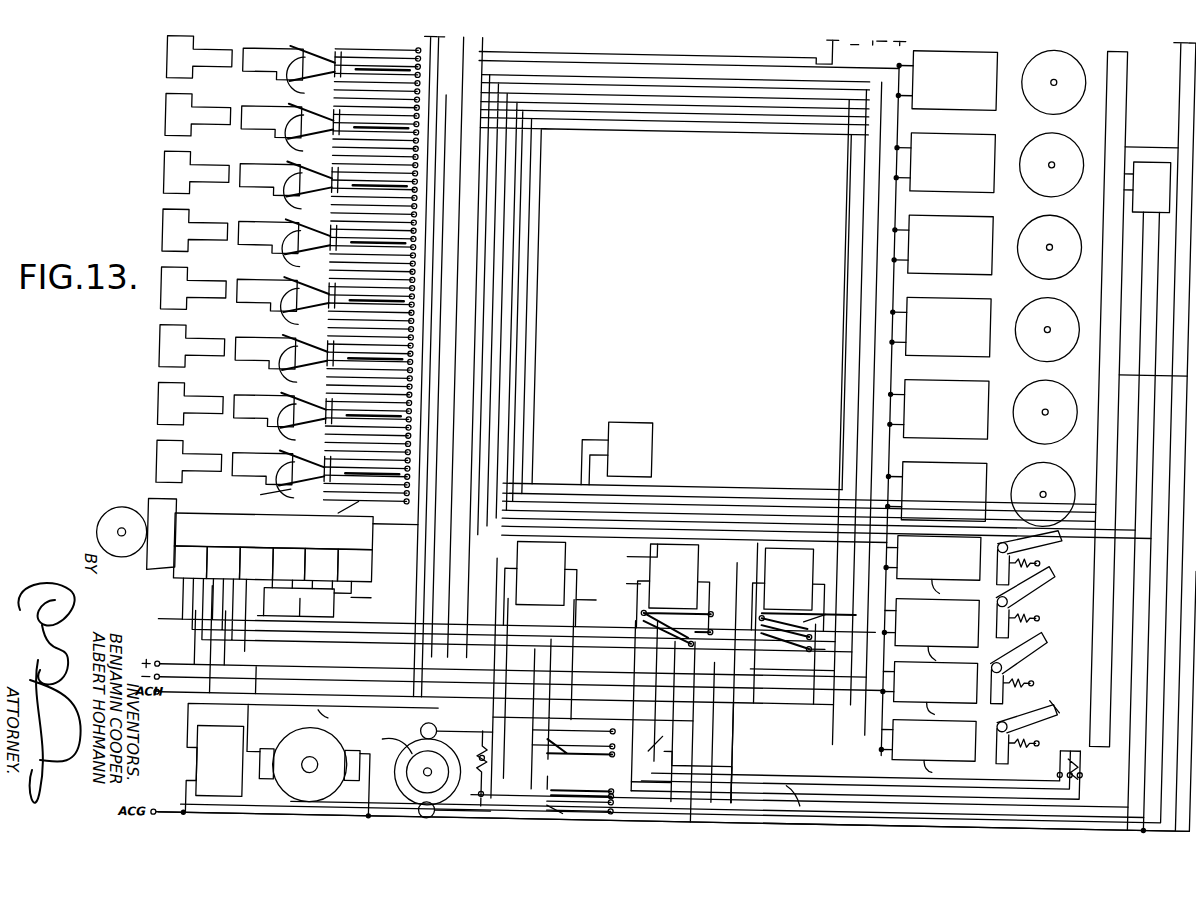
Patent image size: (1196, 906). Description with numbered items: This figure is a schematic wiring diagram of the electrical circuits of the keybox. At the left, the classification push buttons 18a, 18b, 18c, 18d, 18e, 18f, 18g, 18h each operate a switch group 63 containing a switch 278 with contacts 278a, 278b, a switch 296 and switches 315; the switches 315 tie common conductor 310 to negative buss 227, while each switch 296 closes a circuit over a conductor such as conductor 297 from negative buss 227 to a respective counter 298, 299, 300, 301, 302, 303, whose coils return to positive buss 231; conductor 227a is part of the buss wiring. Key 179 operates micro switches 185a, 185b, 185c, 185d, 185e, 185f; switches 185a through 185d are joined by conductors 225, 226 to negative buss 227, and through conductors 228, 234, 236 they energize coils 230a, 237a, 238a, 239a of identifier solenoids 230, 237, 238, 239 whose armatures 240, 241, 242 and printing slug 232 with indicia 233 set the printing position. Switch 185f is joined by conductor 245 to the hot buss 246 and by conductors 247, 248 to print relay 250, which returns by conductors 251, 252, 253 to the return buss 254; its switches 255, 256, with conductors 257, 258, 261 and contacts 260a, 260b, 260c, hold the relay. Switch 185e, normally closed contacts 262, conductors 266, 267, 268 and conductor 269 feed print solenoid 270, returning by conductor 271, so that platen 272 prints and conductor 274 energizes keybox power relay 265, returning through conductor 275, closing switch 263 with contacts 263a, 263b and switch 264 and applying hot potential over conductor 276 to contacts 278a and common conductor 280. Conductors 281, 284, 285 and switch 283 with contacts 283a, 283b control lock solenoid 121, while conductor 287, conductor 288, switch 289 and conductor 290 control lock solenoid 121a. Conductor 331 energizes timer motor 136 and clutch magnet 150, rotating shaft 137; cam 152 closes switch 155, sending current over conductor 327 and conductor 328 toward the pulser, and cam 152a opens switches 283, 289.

The push button 18a is at (157, 474).
The push button 18b is at (157, 416).
The push button 18c is at (157, 358).
The push button 18d is at (157, 300).
The push button 18e is at (157, 243).
The push button 18f is at (157, 185).
The push button 18g is at (157, 127).
The push button 18h is at (157, 70).
The switch group 63 is at (326, 64).
The switch 315 is at (336, 58).
The switch 296 is at (372, 66).
The switch 278 is at (340, 96).
The contact 278a is at (260, 496).
The contact 278b is at (352, 509).
The common conductor 310 is at (455, 46).
The conductor 297 is at (528, 358).
The common conductor 280 is at (474, 438).
The conductor 287 is at (479, 460).
The negative buss 227 is at (434, 81).
The conductor 227a is at (702, 52).
The positive buss 231 is at (401, 676).
The counter 298 is at (991, 471).
The counter 299 is at (991, 389).
The counter 300 is at (991, 309).
The counter 301 is at (991, 226).
The counter 302 is at (991, 144).
The counter 303 is at (993, 64).
The conductor 271 is at (1160, 280).
The identifier solenoid 239 is at (955, 556).
The coil 239a is at (951, 590).
The identifier solenoid 238 is at (952, 623).
The coil 238a is at (949, 651).
The identifier solenoid 237 is at (952, 684).
The coil 237a is at (947, 710).
The identifier solenoid 230 is at (952, 742).
The coil 230a is at (945, 769).
The armature 242 is at (1046, 532).
The armature 241 is at (1052, 562).
The armature 240 is at (1042, 634).
The printing slug 232 is at (1048, 692).
The indicia 233 is at (714, 652).
The fixed contact 260a is at (1092, 762).
The swinging contact 260b is at (1084, 742).
The contact 260c is at (1066, 757).
The printing platen 272 is at (1105, 118).
The print solenoid 270 is at (1156, 177).
The ACG buss 254 is at (1184, 84).
The conductor 327 is at (1182, 120).
The tens counter 328 is at (1170, 138).
The conductor 269 is at (1117, 365).
The lock solenoid 121a is at (640, 454).
The conductor 288 is at (598, 485).
The conductor 276 is at (490, 496).
The conductor 236 is at (375, 525).
The push button lock solenoid 121 is at (556, 586).
The print relay 250 is at (690, 573).
The keybox power relay 265 is at (806, 578).
The conductor 251 is at (630, 563).
The conductor 248 is at (630, 583).
The conductor 281 is at (580, 610).
The switch 255 is at (698, 610).
The switch 256 is at (692, 634).
The switch 264 is at (820, 612).
The switch contact 263a is at (812, 612).
The contact 263b is at (788, 621).
The switch 263 is at (786, 639).
The contacts 262 is at (810, 651).
The conductor 275 is at (768, 668).
The conductor 247 is at (187, 626).
The conductor 268 is at (187, 610).
The conductor 245 is at (186, 652).
The conductor 267 is at (207, 637).
The conductor 226 is at (252, 672).
The ACH buss 246 is at (262, 706).
The conductor 225 is at (308, 599).
The conductor 228 is at (272, 612).
The conductor 234 is at (306, 603).
The conductor 266 is at (520, 654).
The conductor 252 is at (624, 688).
The conductor 257 is at (706, 694).
The conductor 261 is at (780, 720).
The conductor 258 is at (782, 746).
The conductor 253 is at (772, 750).
The conductor 290 is at (667, 738).
The conductor 284 is at (658, 784).
The conductor 274 is at (1019, 776).
The conductor 285 is at (460, 570).
The switch 155 is at (575, 750).
The switch 289 is at (548, 778).
The contact 283a is at (582, 783).
The switch 283 is at (556, 802).
The contact 283b is at (539, 812).
The key 179 is at (115, 516).
The micro switch 185a is at (356, 560).
The micro switch 185b is at (323, 560).
The micro switch 185c is at (294, 560).
The micro switch 185d is at (256, 554).
The micro switch 185e is at (226, 560).
The micro switch 185f is at (192, 554).
The timer motor clutch magnet 150 is at (234, 794).
The timer unit motor 136 is at (300, 729).
The conductor 331 is at (340, 711).
The cam 152 is at (404, 788).
The cam 152a is at (378, 740).
The shaft 137 is at (478, 776).